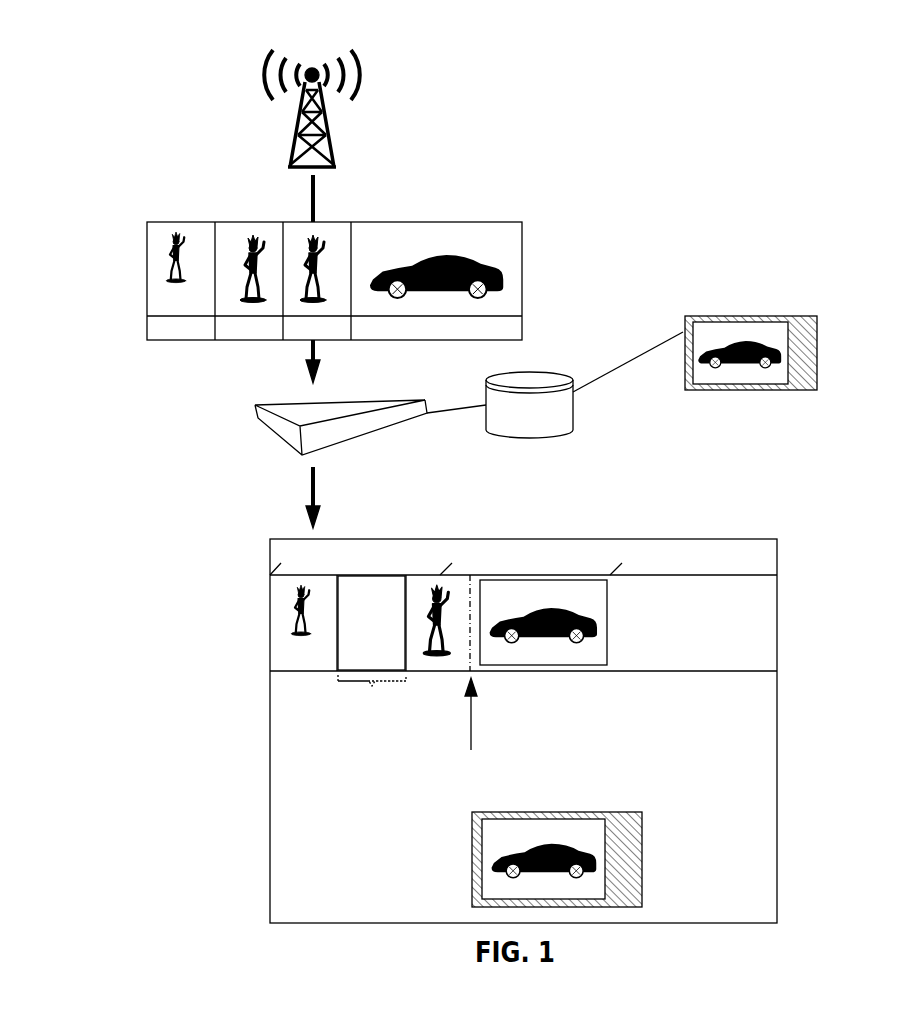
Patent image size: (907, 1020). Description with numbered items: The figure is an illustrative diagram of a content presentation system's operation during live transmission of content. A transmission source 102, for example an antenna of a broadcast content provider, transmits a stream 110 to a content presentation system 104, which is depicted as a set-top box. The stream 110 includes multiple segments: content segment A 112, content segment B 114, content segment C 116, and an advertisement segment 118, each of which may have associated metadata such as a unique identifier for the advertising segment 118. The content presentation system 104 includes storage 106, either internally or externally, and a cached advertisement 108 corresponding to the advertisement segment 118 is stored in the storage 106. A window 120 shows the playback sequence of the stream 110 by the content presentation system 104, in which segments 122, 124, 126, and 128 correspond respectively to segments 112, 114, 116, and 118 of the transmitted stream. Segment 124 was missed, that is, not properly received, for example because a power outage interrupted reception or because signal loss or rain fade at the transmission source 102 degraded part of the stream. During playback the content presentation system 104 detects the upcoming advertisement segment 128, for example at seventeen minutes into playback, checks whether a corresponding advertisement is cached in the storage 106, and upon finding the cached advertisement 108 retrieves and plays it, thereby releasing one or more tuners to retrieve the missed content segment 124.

The transmission source 102 is at (335, 123).
The content presentation system 104 is at (282, 428).
The storage 106 is at (565, 416).
The cached advertisement 108 is at (770, 390).
The stream 110 is at (147, 282).
The content segment A 112 is at (158, 228).
The content segment B 114 is at (230, 228).
The content segment C 116 is at (297, 228).
The advertisement segment 118 is at (375, 228).
The window 120 is at (766, 539).
The segment 122 is at (331, 582).
The missed segment 124 is at (375, 582).
The segment 126 is at (416, 582).
The upcoming advertisement segment 128 is at (492, 588).